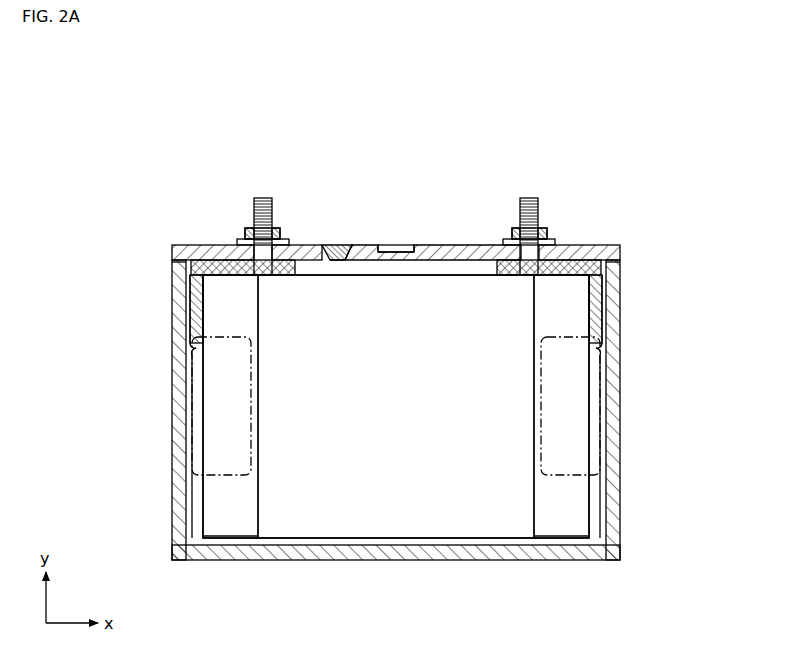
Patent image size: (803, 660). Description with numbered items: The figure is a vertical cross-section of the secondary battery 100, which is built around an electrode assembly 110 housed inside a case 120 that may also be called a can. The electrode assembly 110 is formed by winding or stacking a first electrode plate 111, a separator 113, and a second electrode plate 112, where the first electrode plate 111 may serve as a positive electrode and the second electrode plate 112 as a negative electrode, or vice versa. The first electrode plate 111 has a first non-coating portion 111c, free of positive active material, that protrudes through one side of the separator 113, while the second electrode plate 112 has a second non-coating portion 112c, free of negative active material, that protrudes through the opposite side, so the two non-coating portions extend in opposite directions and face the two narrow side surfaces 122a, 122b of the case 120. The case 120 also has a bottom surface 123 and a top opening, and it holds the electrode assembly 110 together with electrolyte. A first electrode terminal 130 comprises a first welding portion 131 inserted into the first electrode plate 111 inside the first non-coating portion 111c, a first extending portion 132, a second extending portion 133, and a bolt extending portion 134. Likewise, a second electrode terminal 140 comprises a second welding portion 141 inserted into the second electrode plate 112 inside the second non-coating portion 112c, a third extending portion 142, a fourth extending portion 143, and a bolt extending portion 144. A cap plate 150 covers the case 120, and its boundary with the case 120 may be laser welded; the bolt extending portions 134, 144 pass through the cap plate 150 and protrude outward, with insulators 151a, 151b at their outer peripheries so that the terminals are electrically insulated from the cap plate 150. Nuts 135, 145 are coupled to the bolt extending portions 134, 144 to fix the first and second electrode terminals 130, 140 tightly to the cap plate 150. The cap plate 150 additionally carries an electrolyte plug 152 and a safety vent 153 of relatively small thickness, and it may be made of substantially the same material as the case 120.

The secondary battery 100 is at (513, 107).
The electrode assembly 110 is at (395, 540).
The first electrode plate 111 is at (202, 516).
The first non-coating portion 111c is at (208, 530).
The second electrode plate 112 is at (591, 516).
The second non-coating portion 112c is at (584, 530).
The separator 113 is at (320, 530).
The case 120 is at (605, 562).
The narrow side surface 122a is at (171, 266).
The narrow side surface 122b is at (621, 266).
The bottom surface 123 is at (470, 561).
The first electrode terminal 130 is at (254, 195).
The first welding portion 131 is at (194, 428).
The first extending portion 132 is at (197, 301).
The second extending portion 133 is at (200, 262).
The bolt extending portion 134 is at (264, 198).
The nut 135 is at (282, 236).
The second electrode terminal 140 is at (540, 195).
The second welding portion 141 is at (598, 428).
The third extending portion 142 is at (595, 301).
The fourth extending portion 143 is at (592, 262).
The bolt extending portion 144 is at (527, 198).
The nut 145 is at (514, 236).
The cap plate 150 is at (447, 251).
The insulator 151a is at (240, 241).
The insulator 151b is at (553, 241).
The electrolyte plug 152 is at (340, 245).
The safety vent 153 is at (397, 245).